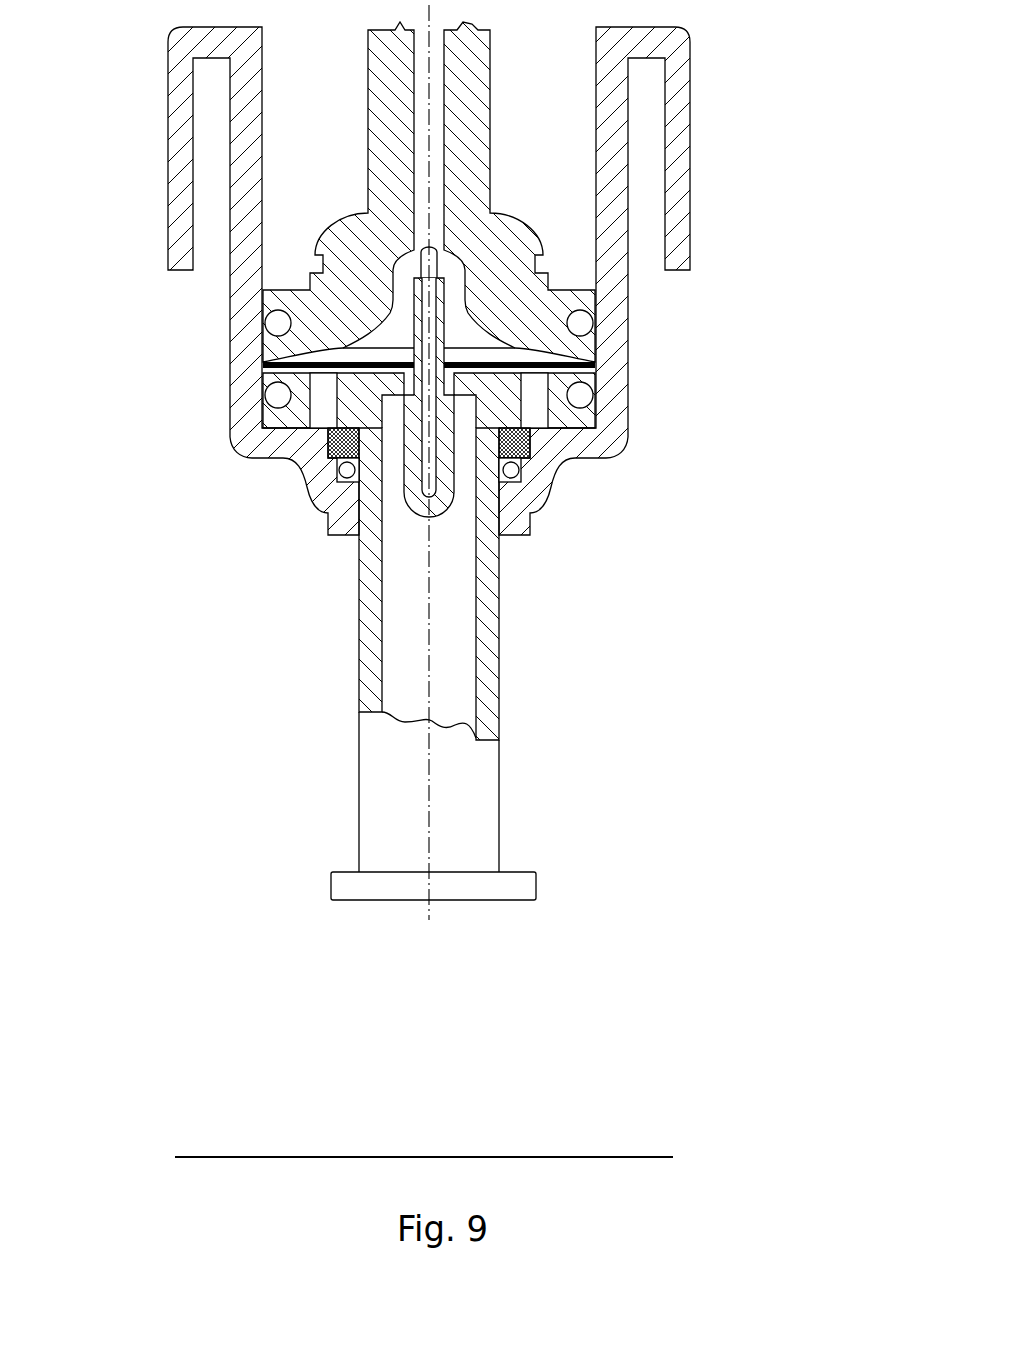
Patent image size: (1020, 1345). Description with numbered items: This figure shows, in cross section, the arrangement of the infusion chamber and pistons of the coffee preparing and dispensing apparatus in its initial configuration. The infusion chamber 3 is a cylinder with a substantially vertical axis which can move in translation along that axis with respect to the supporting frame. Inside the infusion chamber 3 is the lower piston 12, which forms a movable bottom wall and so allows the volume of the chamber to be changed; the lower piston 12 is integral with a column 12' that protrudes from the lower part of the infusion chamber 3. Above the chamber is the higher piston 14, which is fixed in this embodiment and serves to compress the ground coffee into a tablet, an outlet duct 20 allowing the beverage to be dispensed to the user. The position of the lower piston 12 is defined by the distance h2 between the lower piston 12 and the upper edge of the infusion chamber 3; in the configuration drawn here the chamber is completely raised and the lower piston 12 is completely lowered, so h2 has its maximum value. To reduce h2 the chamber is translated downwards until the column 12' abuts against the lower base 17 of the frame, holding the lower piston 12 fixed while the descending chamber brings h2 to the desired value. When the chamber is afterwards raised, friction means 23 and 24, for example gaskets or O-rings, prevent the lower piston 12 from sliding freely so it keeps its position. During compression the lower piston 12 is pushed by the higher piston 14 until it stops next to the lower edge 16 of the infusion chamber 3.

The infusion chamber 3 is at (228, 240).
The lower piston 12 is at (293, 584).
The column 12' is at (491, 806).
The higher piston 14 is at (343, 228).
The lower edge 16 is at (558, 440).
The lower base 17 is at (546, 1157).
The outlet duct 20 is at (436, 133).
The friction means 23 is at (582, 395).
The friction means 24 is at (545, 456).
The distance h2 is at (680, 27).